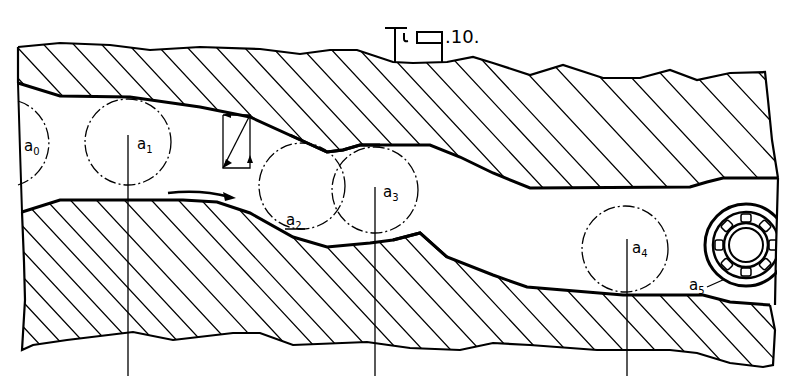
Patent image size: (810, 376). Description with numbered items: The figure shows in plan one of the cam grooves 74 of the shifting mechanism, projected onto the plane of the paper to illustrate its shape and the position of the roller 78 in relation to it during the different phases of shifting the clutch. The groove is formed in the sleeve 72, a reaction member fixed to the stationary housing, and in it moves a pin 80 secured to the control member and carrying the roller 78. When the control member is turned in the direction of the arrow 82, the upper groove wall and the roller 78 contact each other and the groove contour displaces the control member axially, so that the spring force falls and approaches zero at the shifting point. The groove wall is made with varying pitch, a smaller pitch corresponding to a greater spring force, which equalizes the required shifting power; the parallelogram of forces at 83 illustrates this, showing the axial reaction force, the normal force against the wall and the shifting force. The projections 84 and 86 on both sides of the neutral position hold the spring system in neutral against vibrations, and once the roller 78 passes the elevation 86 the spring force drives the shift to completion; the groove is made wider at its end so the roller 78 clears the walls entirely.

The sleeve 72 is at (572, 134).
The cam groove 74 is at (528, 247).
The roller 78 is at (718, 228).
The pin 80 is at (755, 253).
The arrow 82 is at (202, 185).
The parallelogram of forces 83 is at (233, 149).
The projection 84 is at (333, 149).
The projection 86 is at (421, 237).